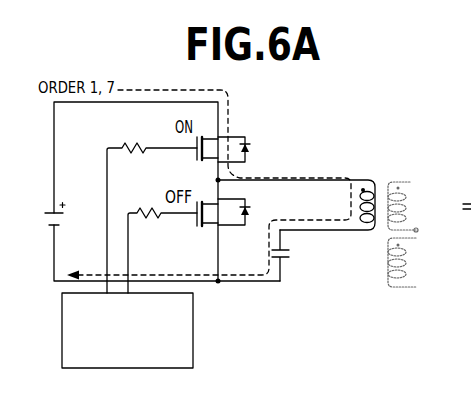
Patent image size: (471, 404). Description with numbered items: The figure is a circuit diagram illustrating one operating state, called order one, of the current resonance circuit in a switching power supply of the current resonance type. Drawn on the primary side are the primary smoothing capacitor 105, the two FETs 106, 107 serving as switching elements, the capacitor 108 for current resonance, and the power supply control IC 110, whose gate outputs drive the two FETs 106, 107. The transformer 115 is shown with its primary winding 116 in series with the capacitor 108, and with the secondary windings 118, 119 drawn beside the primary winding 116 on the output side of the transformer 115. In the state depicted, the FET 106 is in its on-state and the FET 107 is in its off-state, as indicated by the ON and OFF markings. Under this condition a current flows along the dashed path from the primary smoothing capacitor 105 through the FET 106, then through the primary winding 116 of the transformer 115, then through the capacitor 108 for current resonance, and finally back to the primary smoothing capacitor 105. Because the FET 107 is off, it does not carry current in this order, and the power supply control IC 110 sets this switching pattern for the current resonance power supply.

The primary smoothing capacitor 105 is at (66, 210).
The FET 106 is at (196, 157).
The FET 107 is at (197, 223).
The capacitor for current resonance 108 is at (290, 253).
The power supply control IC 110 is at (193, 338).
The transformer 115 is at (427, 209).
The primary winding 116 is at (361, 178).
The secondary winding 118 is at (427, 207).
The secondary winding 119 is at (427, 262).